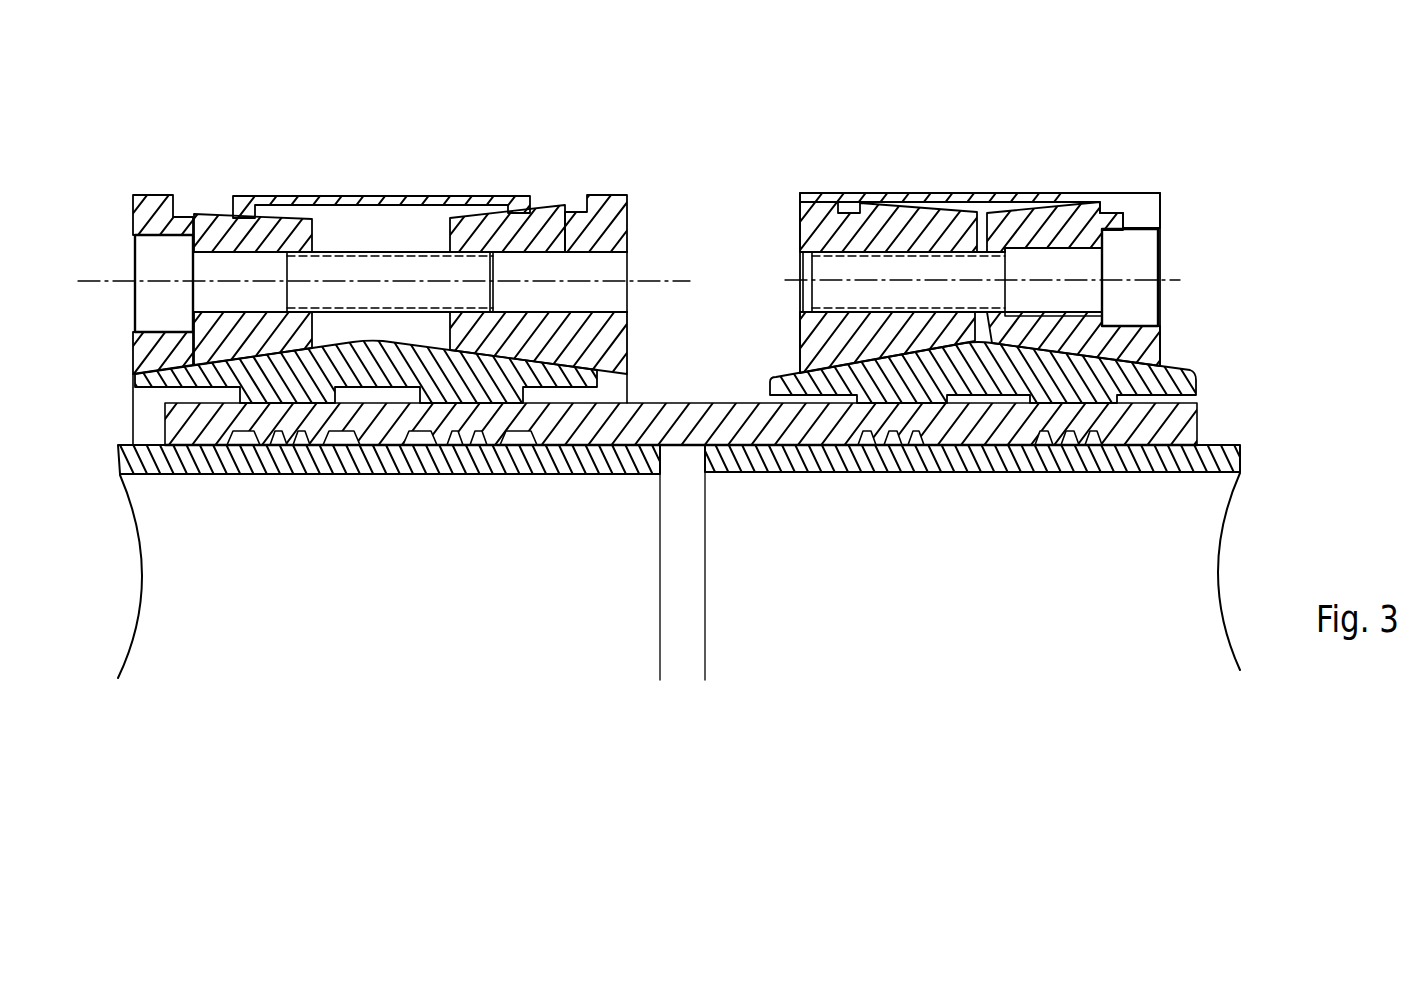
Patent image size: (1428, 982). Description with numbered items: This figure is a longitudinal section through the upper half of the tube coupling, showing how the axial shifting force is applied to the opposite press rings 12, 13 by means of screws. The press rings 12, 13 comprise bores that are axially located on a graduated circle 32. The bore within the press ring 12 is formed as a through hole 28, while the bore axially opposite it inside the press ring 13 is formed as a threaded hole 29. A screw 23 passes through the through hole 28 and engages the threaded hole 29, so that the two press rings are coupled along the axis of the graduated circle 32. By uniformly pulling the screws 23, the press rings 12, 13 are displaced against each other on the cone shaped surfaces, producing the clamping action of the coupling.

The press ring 12 is at (150, 215).
The press ring 13 is at (604, 215).
The screw 23 is at (370, 281).
The through hole 28 is at (253, 250).
The threaded hole 29 is at (559, 250).
The graduated circle 32 is at (655, 277).